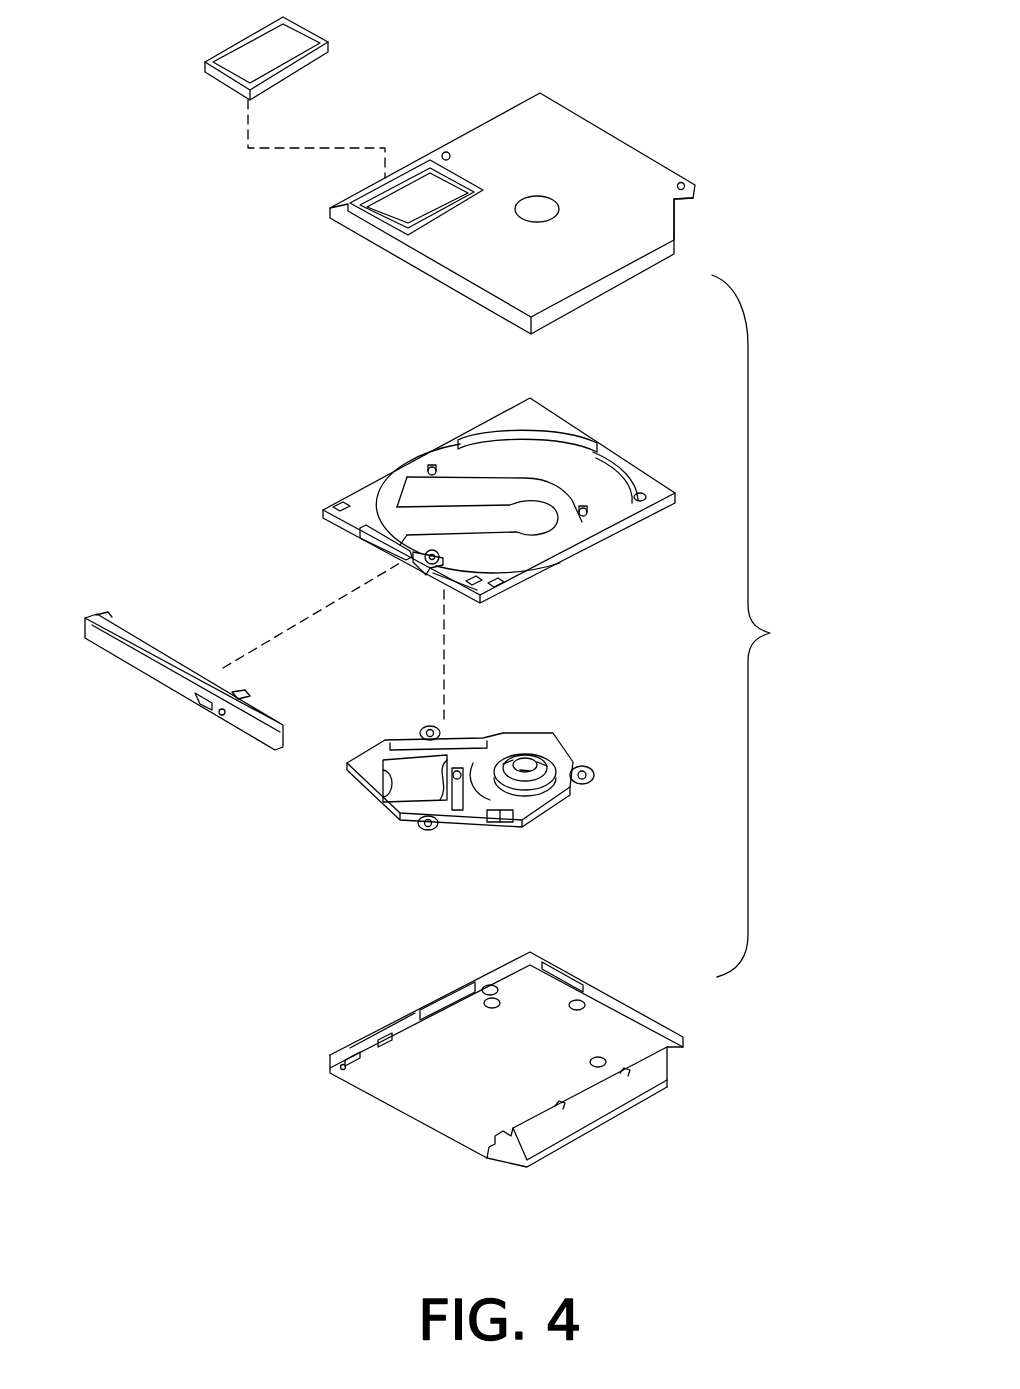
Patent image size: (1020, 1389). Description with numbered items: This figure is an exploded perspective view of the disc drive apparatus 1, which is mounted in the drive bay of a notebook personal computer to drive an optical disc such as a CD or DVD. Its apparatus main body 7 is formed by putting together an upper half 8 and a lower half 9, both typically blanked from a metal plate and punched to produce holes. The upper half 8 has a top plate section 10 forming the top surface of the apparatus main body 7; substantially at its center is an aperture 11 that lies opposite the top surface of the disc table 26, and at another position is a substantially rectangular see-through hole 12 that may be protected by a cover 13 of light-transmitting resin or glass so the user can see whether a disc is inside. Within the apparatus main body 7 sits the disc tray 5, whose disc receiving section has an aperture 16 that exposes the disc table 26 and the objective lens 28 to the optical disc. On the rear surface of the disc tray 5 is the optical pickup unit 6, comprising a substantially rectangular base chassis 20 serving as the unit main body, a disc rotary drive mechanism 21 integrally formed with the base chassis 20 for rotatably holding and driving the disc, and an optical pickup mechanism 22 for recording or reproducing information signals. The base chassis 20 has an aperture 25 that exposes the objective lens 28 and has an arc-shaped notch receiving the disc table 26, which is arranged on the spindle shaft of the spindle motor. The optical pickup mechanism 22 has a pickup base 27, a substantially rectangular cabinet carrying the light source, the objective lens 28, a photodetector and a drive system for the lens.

The disc drive apparatus 1 is at (190, 157).
The disc tray 5 is at (613, 467).
The optical pickup unit 6 is at (481, 768).
The apparatus main body 7 is at (757, 626).
The upper half 8 is at (632, 272).
The lower half 9 is at (617, 992).
The top plate section 10 is at (652, 232).
The aperture 11 is at (545, 207).
The see-through hole 12 is at (433, 163).
The cover 13 is at (245, 57).
The aperture 16 is at (484, 478).
The base chassis 20 is at (362, 785).
The disc rotary drive mechanism 21 is at (545, 785).
The optical pickup mechanism 22 is at (466, 765).
The aperture 25 is at (388, 808).
The disc table 26 is at (538, 752).
The pickup base 27 is at (435, 768).
The objective lens 28 is at (459, 790).